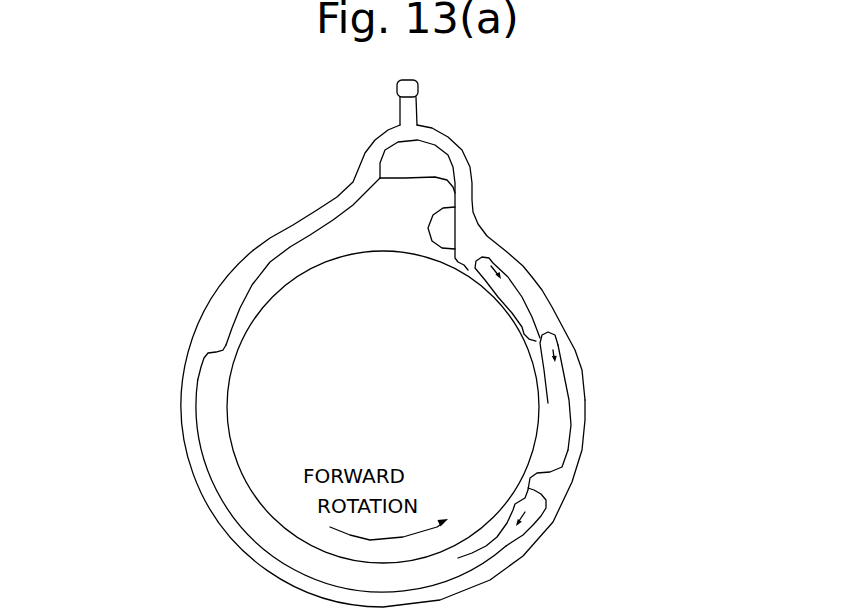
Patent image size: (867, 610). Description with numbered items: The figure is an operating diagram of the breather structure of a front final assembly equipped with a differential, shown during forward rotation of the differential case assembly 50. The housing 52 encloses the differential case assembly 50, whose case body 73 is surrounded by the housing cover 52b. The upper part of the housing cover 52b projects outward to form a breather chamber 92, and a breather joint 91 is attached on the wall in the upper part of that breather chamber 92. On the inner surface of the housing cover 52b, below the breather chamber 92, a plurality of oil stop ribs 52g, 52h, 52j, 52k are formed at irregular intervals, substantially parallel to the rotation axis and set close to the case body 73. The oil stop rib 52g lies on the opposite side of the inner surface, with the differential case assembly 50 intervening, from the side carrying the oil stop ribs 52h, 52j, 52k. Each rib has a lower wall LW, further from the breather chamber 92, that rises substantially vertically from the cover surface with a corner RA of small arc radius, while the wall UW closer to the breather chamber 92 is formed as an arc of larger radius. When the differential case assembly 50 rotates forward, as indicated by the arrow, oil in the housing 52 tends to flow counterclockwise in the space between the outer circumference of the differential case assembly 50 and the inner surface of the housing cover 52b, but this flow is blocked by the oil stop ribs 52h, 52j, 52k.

The differential case assembly 50 is at (230, 454).
The case body 73 is at (262, 504).
The housing 52 is at (208, 227).
The housing cover 52b is at (306, 215).
The oil stop rib 52g is at (219, 340).
The oil stop rib 52k is at (467, 259).
The oil stop rib 52j is at (538, 331).
The oil stop rib 52h is at (548, 482).
The breather joint 91 is at (419, 112).
The breather chamber 92 is at (431, 165).
The wall closer to the breather chamber UW is at (452, 210).
The lower wall LW is at (480, 265).
The corner RA is at (503, 268).